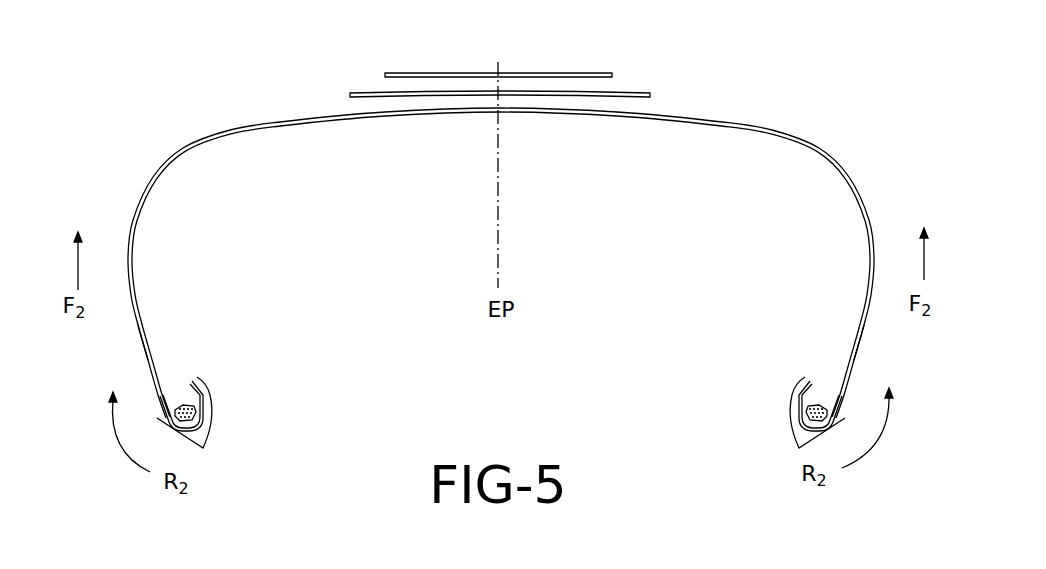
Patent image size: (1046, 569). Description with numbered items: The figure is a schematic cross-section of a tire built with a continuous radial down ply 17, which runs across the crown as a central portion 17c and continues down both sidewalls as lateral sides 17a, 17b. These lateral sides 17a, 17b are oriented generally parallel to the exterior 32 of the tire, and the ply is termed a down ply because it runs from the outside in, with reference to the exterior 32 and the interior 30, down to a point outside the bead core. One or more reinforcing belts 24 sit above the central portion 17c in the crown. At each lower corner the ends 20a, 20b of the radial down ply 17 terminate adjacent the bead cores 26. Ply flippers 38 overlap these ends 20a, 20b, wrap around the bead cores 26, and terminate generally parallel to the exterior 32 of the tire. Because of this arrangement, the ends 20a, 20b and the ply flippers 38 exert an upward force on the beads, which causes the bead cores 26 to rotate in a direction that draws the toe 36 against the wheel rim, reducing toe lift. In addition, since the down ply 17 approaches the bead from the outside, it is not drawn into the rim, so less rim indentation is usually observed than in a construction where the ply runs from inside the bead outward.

The radial down ply 17 is at (762, 127).
The lateral edge portion of the radial down ply 17a is at (166, 167).
The lateral edge portion of the radial down ply 17b is at (832, 164).
The central portion of the radial down ply 17c is at (425, 113).
The reinforcing belt 24 is at (376, 95).
The bead core 26 is at (178, 404).
The ply flipper 38 is at (204, 392).
The toe 36 is at (203, 450).
The turn-up end 20a is at (156, 384).
The turn-up end 20b is at (847, 381).
The interior of the tire 30 is at (232, 283).
The exterior of the tire 32 is at (100, 222).